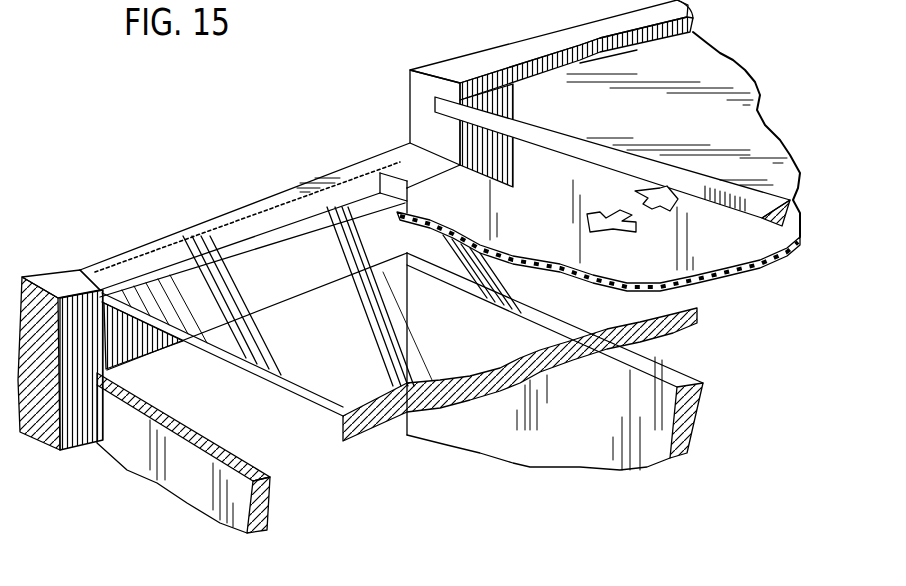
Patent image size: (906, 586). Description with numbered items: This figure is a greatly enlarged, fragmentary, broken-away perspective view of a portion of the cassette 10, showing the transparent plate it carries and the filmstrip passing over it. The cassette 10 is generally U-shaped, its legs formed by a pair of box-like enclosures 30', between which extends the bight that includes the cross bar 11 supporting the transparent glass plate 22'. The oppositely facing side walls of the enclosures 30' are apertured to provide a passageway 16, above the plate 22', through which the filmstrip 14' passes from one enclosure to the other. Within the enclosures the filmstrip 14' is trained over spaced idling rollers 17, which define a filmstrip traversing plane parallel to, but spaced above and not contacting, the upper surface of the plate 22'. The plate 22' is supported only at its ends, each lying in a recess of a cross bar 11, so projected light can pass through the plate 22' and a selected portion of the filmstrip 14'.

The cassette 10 is at (151, 188).
The cross bar 11 is at (63, 272).
The filmstrip 14' is at (598, 161).
The passageway 16 is at (453, 140).
The idling roller 17 is at (233, 236).
The transparent glass plate 22' is at (399, 324).
The box-like enclosure 30' is at (406, 415).